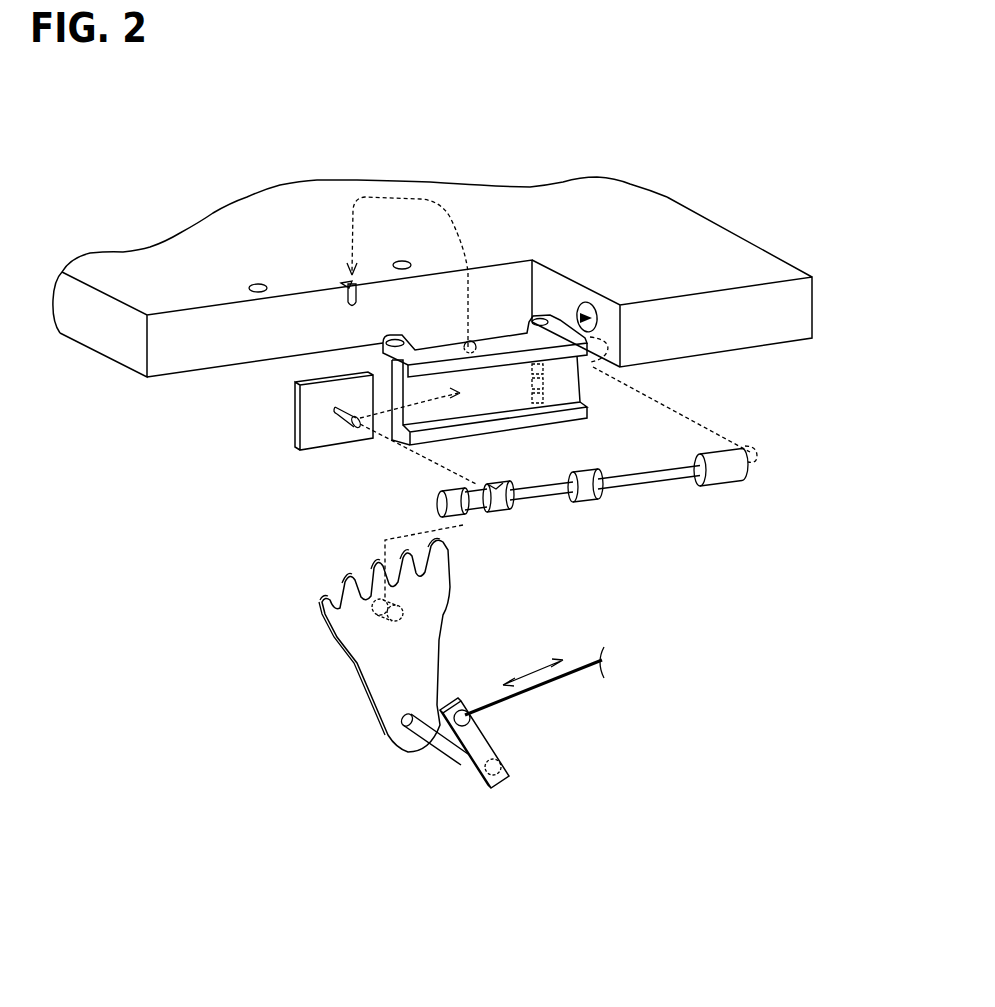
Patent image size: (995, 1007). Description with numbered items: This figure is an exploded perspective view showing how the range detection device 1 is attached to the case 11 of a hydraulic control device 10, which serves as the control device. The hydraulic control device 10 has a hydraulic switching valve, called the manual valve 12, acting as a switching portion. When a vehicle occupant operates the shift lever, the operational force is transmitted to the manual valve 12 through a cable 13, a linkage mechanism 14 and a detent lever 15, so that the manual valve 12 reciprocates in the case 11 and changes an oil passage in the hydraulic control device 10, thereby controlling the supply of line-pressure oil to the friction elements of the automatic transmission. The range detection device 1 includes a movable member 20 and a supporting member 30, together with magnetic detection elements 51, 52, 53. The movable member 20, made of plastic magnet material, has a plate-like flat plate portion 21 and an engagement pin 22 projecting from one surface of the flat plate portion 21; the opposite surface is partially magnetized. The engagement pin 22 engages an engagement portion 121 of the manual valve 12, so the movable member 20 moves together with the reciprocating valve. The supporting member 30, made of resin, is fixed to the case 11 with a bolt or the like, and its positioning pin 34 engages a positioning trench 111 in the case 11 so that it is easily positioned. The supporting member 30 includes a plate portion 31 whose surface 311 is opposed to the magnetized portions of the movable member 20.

The range detection device 1 is at (386, 485).
The hydraulic control device 10 is at (667, 197).
The case 11 is at (735, 260).
The positioning trench 111 is at (345, 297).
The manual valve 12 is at (592, 501).
The engagement portion 121 is at (505, 488).
The cable 13 is at (545, 690).
The linkage mechanism 14 is at (450, 750).
The detent lever 15 is at (355, 682).
The movable member 20 is at (349, 443).
The flat plate portion 21 is at (308, 422).
The engagement pin 22 is at (333, 413).
The supporting member 30 is at (520, 292).
The plate portion 31 is at (530, 399).
The surface 311 is at (567, 372).
The positioning pin 34 is at (472, 342).
The magnetic detection element 51 is at (548, 374).
The magnetic detection element 52 is at (545, 389).
The magnetic detection element 53 is at (532, 403).